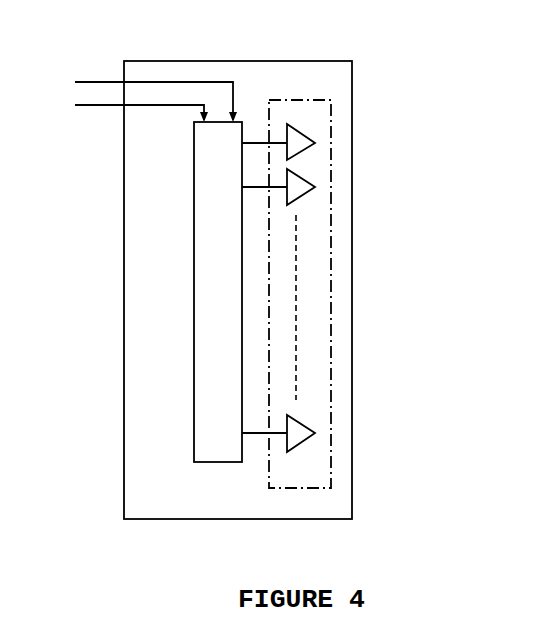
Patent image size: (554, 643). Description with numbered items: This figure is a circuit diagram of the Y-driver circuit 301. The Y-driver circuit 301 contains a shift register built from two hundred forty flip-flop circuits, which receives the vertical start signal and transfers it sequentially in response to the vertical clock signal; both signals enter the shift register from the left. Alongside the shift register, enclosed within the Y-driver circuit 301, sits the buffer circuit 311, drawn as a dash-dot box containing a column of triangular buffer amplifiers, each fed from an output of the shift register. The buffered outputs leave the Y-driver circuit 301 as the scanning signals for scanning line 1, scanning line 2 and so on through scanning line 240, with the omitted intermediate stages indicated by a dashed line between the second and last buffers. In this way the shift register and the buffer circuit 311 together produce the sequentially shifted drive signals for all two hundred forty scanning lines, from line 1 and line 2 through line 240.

The Y-driver circuit 301 is at (242, 259).
The buffer circuit 311 is at (361, 271).
The output buffer for scanning line Y1 1 is at (315, 143).
The output buffer for scanning line Y2 2 is at (315, 187).
The output buffer for scanning line Y240 240 is at (315, 433).